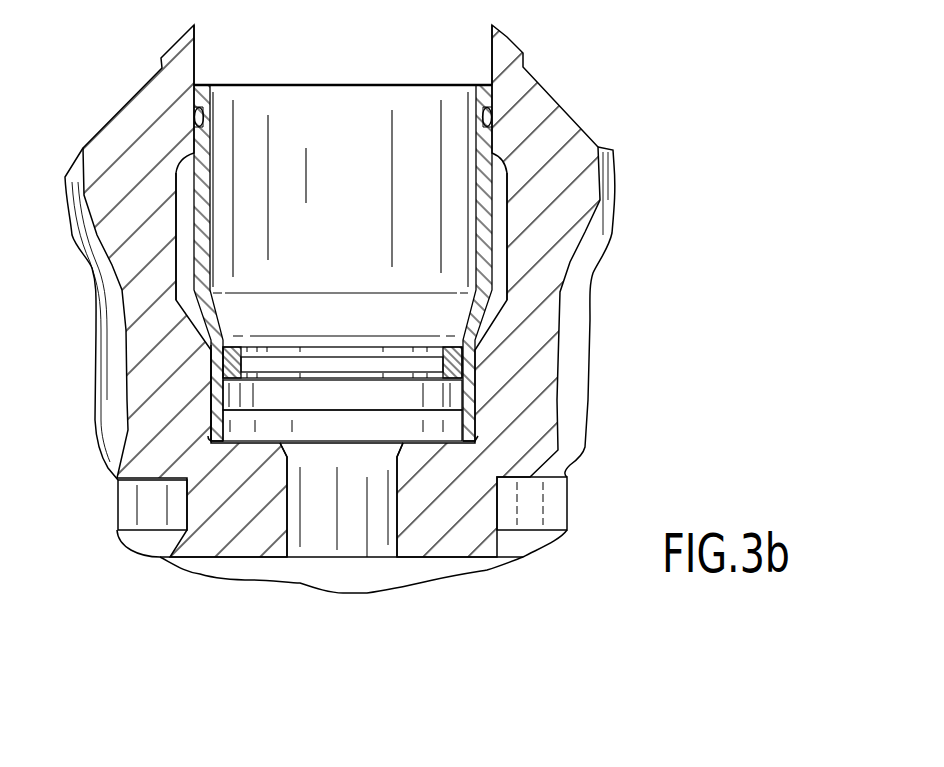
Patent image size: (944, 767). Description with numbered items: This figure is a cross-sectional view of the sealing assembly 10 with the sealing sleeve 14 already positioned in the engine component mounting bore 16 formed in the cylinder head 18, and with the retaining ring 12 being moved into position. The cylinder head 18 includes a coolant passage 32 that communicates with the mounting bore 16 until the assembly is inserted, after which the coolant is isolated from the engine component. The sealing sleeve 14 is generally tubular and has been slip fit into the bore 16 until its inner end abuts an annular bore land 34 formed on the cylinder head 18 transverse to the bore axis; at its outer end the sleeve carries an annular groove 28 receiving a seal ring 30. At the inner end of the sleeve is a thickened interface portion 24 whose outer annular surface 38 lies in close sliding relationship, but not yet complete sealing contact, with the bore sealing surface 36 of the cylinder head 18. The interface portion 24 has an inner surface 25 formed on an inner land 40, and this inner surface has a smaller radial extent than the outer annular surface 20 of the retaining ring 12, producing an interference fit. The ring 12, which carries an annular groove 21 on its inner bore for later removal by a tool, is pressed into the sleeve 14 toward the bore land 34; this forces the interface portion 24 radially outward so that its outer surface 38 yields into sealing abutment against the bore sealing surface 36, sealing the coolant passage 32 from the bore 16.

The sealing assembly 10 is at (479, 76).
The retaining ring 12 is at (230, 360).
The sealing sleeve 14 is at (200, 265).
The engine component mounting bore 16 is at (195, 67).
The cylinder head 18 is at (100, 173).
The outer annular surface 20 is at (470, 372).
The annular groove 21 is at (447, 357).
The interface portion 24 is at (484, 411).
The inner surface 25 is at (120, 486).
The annular groove 28 is at (197, 108).
The seal ring 30 is at (197, 118).
The coolant passage 32 is at (193, 323).
The annular bore land 34 is at (263, 445).
The bore sealing surface 36 is at (222, 432).
The outer annular surface 38 is at (220, 420).
The land 40 is at (470, 433).